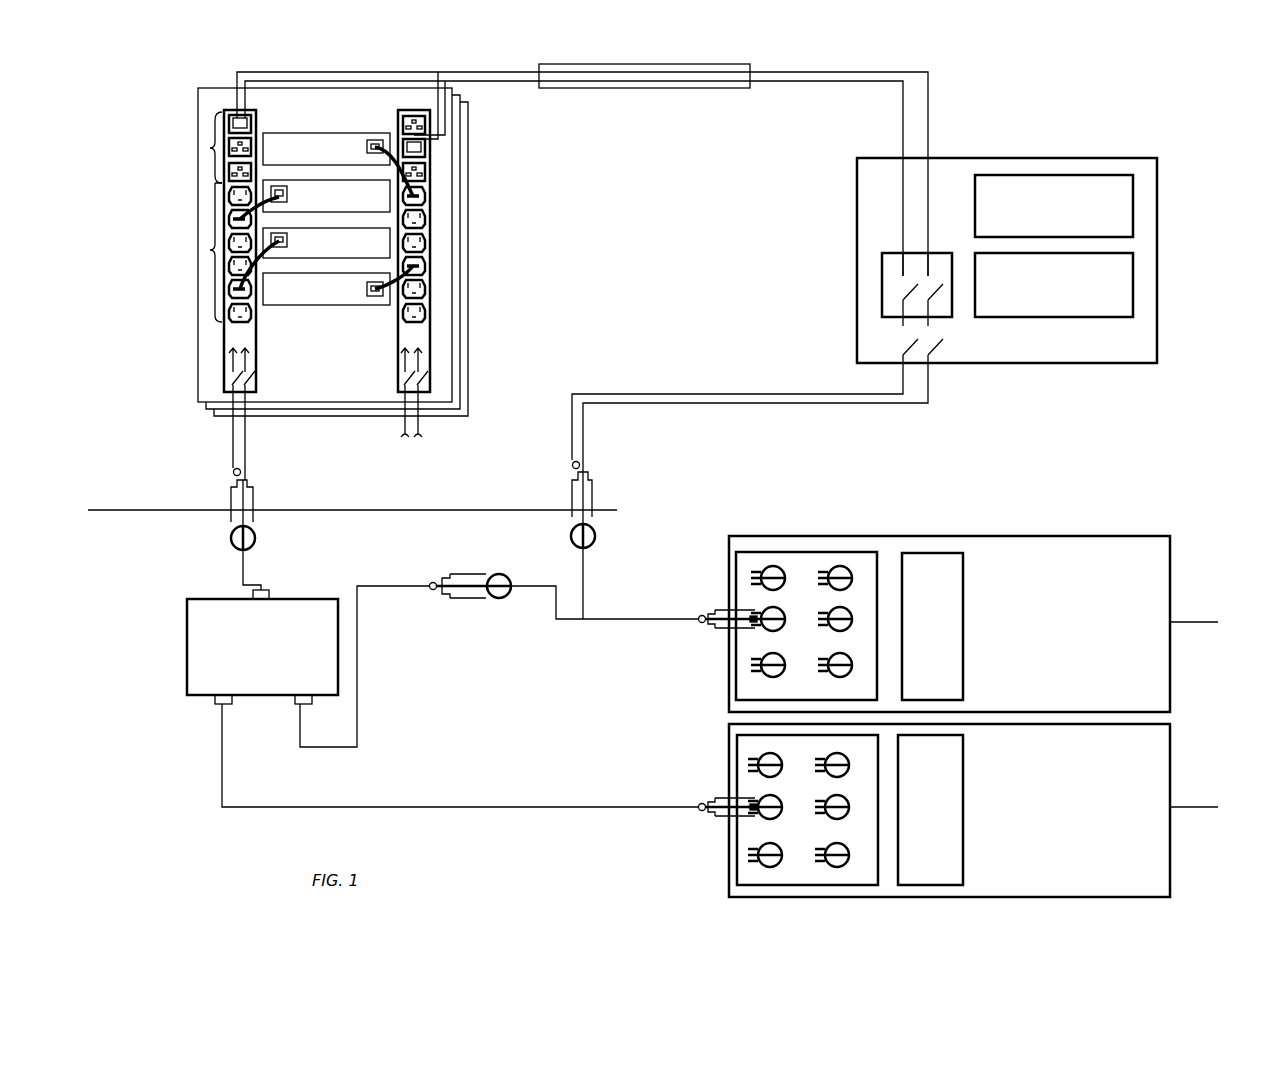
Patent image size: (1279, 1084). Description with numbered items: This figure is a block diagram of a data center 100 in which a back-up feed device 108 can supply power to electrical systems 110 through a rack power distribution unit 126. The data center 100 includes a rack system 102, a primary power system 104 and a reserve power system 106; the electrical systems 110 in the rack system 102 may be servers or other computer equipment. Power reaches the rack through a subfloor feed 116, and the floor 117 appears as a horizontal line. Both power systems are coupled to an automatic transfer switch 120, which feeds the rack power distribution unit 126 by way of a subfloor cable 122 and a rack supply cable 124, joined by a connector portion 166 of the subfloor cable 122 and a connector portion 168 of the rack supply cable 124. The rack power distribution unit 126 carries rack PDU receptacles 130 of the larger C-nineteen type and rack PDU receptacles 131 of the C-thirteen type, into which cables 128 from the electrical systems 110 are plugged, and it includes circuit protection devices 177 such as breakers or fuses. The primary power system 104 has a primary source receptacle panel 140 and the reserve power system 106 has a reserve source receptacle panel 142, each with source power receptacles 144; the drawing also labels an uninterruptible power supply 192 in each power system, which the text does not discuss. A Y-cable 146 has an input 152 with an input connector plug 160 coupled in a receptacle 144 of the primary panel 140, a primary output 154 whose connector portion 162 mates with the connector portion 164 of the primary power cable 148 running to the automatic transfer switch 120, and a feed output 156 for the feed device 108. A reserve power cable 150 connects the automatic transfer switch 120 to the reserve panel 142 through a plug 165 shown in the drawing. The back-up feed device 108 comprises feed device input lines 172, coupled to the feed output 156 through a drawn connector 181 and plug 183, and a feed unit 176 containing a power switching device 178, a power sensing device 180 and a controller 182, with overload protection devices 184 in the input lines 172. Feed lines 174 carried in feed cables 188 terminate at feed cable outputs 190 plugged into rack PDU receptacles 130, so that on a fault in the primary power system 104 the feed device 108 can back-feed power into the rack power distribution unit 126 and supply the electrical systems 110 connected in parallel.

The data center 100 is at (948, 90).
The rack system 102 is at (331, 267).
The primary power system 104 is at (973, 624).
The reserve power system 106 is at (972, 810).
The back-up feed device 108 is at (1090, 147).
The electrical systems 110 is at (326, 289).
The subfloor feed 116 is at (184, 566).
The floor 117 is at (405, 508).
The automatic transfer switch 120 is at (262, 656).
The subfloor power cable 122 is at (243, 585).
The rack supply cable 124 is at (233, 450).
The rack power distribution unit 126 is at (257, 325).
The cables 128 is at (380, 298).
The rack PDU receptacles 130 is at (208, 148).
The rack PDU receptacles 131 is at (208, 250).
The primary source receptacle panel 140 is at (730, 680).
The reserve source receptacle panel 142 is at (737, 862).
The source power receptacles 144 is at (755, 575).
The Y-cable 146 is at (567, 625).
The primary power cable 148 is at (333, 748).
The reserve power cable 150 is at (502, 808).
The input 152 is at (670, 642).
The primary output 154 is at (472, 596).
The feed output 156 is at (573, 505).
The input connector plug 160 is at (716, 632).
The connector portion 162 is at (505, 574).
The connector portion 164 is at (452, 574).
The plug into reserve power system 165 is at (716, 820).
The connector portion 166 is at (256, 538).
The connector portion 168 is at (254, 502).
The feed device input lines 172 is at (808, 420).
The feed lines 174 is at (890, 116).
The feed unit 176 is at (1100, 365).
The circuit protection devices 177 is at (226, 378).
The power switching device 178 is at (882, 277).
The power sensing device 180 is at (1133, 206).
The back-up connector 181 is at (596, 538).
The controller 182 is at (1054, 285).
The back-up plug 183 is at (594, 498).
The overload protection devices 184 is at (938, 350).
The feed cables 188 is at (643, 88).
The feed cable outputs 190 is at (427, 150).
The UPS 192 is at (930, 719).